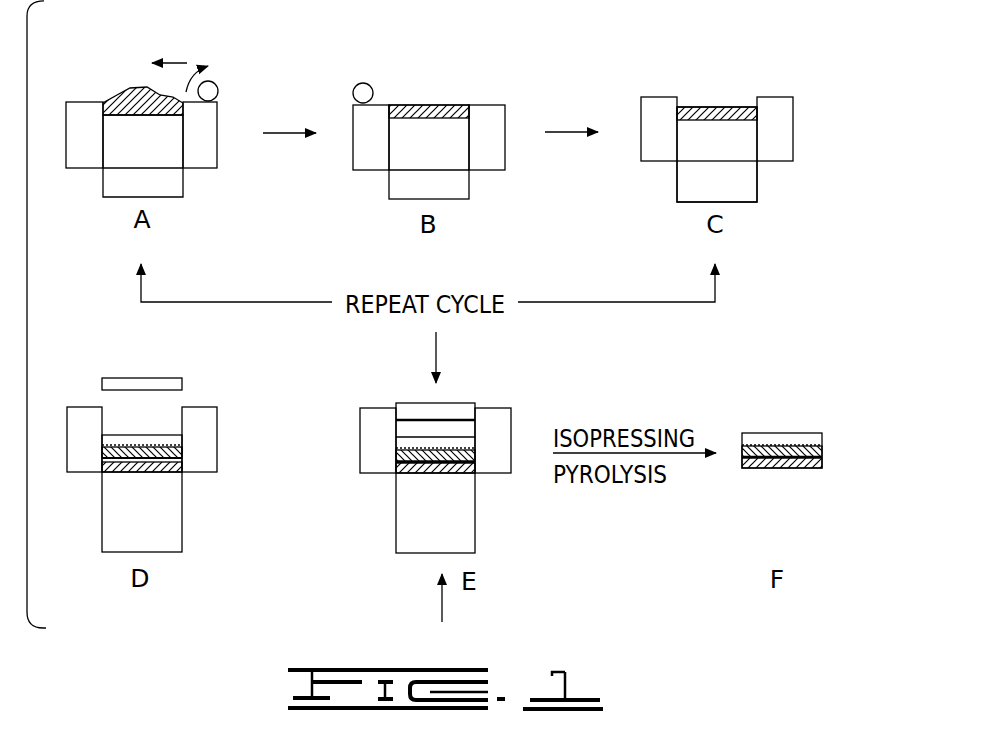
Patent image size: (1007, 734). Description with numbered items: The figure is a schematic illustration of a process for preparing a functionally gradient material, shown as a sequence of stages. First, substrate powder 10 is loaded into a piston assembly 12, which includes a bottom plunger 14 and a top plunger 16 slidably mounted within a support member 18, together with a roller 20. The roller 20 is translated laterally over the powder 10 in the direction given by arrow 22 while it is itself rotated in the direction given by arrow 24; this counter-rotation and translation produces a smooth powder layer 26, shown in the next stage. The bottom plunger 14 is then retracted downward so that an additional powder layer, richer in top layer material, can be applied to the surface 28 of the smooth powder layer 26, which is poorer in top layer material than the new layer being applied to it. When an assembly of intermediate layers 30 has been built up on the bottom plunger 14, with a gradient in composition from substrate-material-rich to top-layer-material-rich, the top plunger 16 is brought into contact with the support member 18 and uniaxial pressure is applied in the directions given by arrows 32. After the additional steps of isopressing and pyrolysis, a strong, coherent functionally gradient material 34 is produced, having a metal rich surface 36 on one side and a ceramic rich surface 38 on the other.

The substrate powder 10 is at (140, 92).
The piston assembly 12 is at (200, 203).
The bottom plunger 14 is at (733, 187).
The top plunger 16 is at (133, 383).
The support member 18 is at (203, 418).
The roller 20 is at (211, 88).
The arrow 22 is at (175, 60).
The arrow 24 is at (192, 66).
The smooth powder layer 26 is at (418, 105).
The surface 28 is at (708, 107).
The intermediate layers 30 is at (190, 448).
The arrows 32 is at (436, 355).
The functionally gradient material 34 is at (775, 418).
The metal rich surface 36 is at (810, 468).
The ceramic rich surface 38 is at (800, 435).